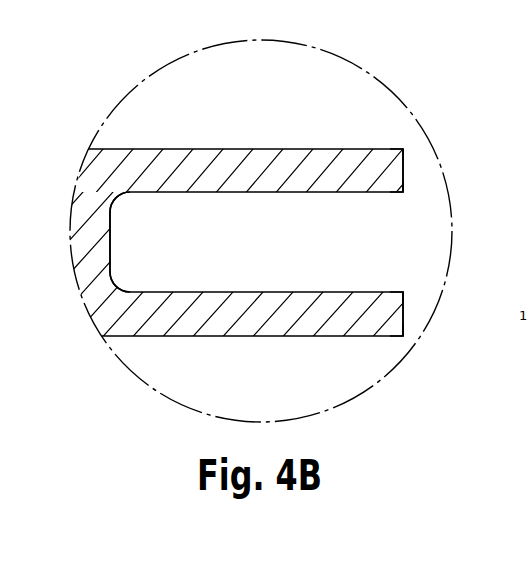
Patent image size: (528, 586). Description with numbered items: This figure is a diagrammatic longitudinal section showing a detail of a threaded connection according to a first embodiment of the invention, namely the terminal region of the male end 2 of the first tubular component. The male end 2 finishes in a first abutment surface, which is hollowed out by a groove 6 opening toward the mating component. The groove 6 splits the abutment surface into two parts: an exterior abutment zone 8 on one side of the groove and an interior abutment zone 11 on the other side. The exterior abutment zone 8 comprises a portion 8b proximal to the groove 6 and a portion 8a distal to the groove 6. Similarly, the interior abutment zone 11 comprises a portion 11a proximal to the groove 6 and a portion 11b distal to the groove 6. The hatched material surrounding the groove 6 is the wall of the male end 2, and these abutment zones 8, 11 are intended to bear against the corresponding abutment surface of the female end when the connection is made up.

The male end 2 is at (97, 294).
The groove 6 is at (271, 234).
The exterior abutment zone 8 is at (403, 170).
The distal portion of exterior abutment zone 8a is at (403, 150).
The proximal portion of exterior abutment zone 8b is at (403, 190).
The interior abutment zone 11 is at (403, 312).
The proximal portion of interior abutment zone 11a is at (403, 292).
The distal portion of interior abutment zone 11b is at (403, 336).